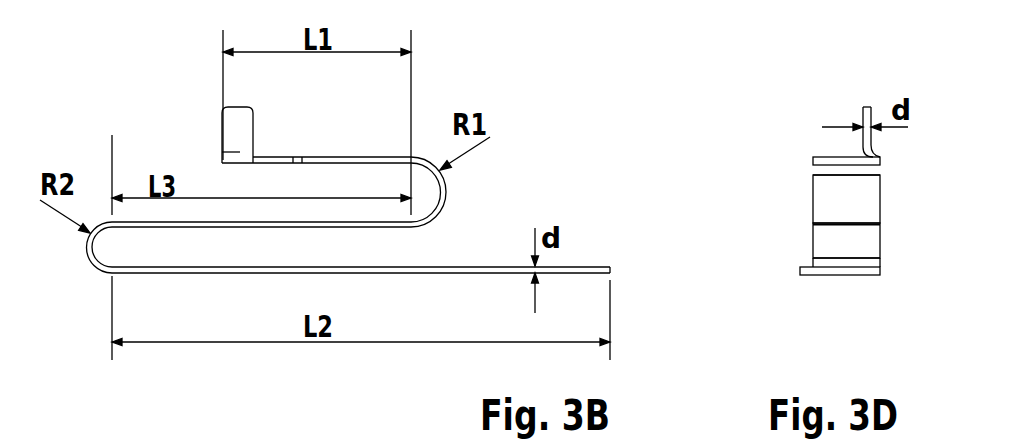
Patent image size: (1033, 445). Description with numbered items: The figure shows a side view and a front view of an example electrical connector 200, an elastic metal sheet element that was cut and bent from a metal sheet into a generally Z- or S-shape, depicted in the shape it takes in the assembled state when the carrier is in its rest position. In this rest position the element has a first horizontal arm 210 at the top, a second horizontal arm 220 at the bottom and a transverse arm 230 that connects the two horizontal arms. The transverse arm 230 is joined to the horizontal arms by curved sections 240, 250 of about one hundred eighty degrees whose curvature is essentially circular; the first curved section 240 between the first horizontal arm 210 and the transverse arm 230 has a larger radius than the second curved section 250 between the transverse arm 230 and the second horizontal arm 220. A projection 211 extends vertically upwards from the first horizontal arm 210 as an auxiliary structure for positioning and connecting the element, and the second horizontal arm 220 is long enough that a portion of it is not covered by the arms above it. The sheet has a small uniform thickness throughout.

In FIG. 3B, the electrical connector 200 is at (434, 94).
In FIG. 3D, the electrical connector 200 is at (815, 105).
In FIG. 3B, the first horizontal arm 210 is at (325, 157).
In FIG. 3D, the first horizontal arm 210 is at (862, 146).
In FIG. 3B, the projection 211 is at (237, 128).
In FIG. 3D, the projection 211 is at (866, 107).
In FIG. 3B, the second horizontal arm 220 is at (392, 275).
In FIG. 3D, the second horizontal arm 220 is at (807, 277).
In FIG. 3B, the transverse arm 230 is at (205, 225).
In FIG. 3B, the first curved section 240 is at (447, 194).
In FIG. 3D, the first curved section 240 is at (830, 195).
In FIG. 3B, the second curved section 250 is at (87, 261).
In FIG. 3D, the second curved section 250 is at (830, 248).